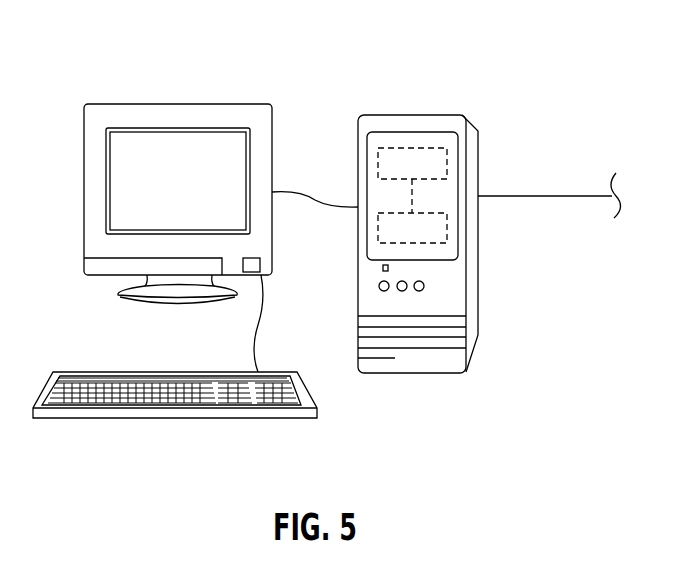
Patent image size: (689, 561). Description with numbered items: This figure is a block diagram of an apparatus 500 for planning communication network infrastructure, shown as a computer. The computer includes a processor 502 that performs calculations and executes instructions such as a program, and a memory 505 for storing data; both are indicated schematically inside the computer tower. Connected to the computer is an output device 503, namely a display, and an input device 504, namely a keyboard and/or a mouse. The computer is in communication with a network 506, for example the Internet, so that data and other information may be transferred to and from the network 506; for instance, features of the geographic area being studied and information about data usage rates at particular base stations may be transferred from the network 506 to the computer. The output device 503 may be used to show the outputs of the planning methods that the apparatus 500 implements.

The apparatus 500 is at (352, 66).
The processor 502 is at (447, 163).
The output device 503 is at (178, 103).
The input device 504 is at (172, 420).
The memory 505 is at (447, 228).
The network 506 is at (567, 196).